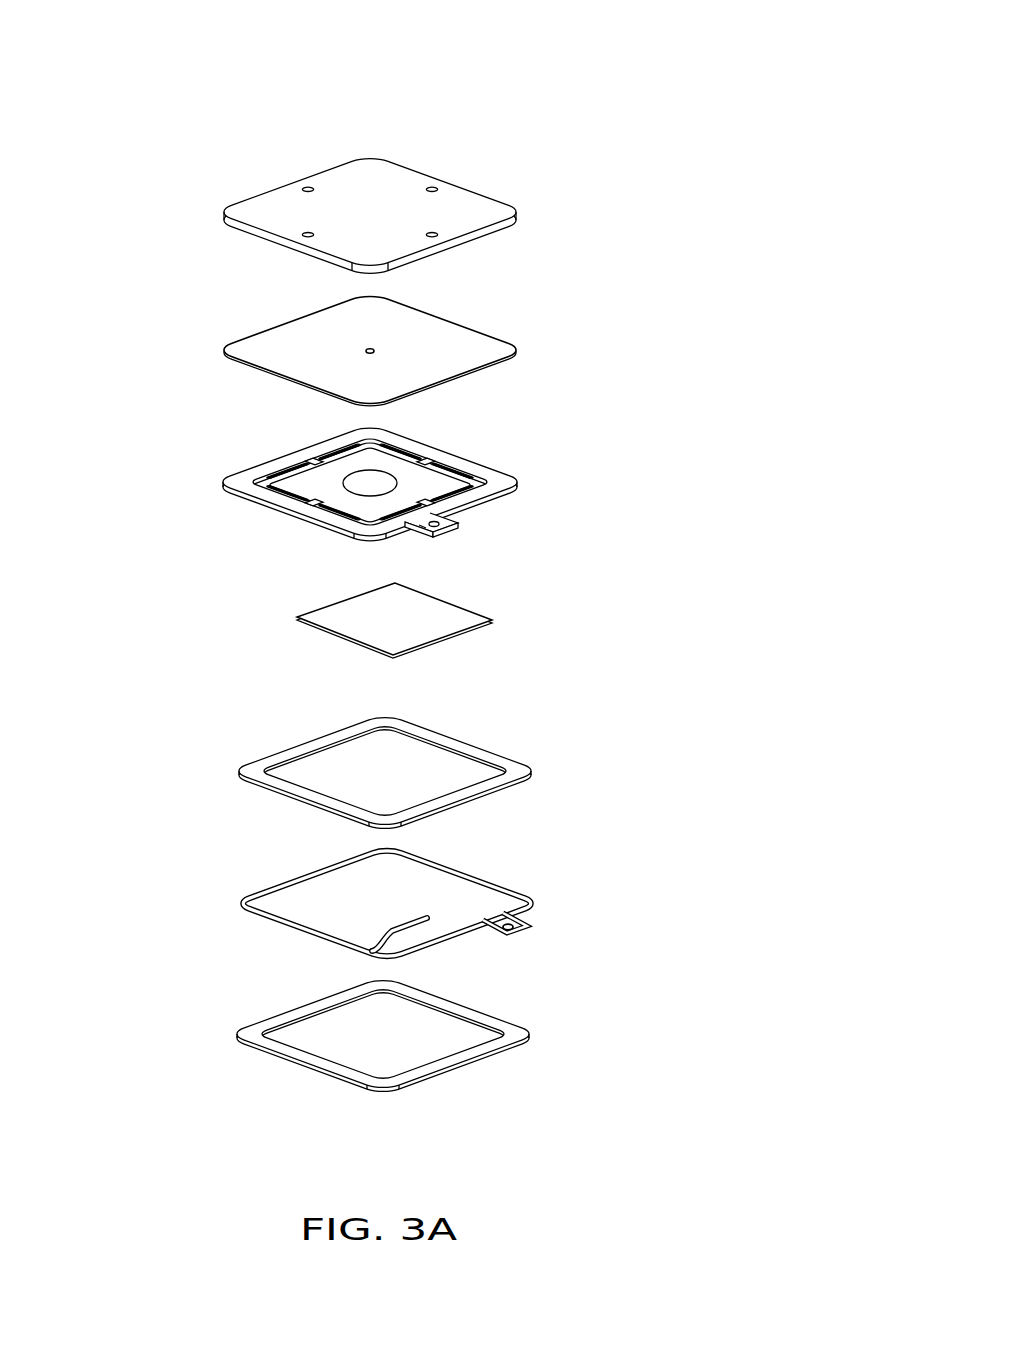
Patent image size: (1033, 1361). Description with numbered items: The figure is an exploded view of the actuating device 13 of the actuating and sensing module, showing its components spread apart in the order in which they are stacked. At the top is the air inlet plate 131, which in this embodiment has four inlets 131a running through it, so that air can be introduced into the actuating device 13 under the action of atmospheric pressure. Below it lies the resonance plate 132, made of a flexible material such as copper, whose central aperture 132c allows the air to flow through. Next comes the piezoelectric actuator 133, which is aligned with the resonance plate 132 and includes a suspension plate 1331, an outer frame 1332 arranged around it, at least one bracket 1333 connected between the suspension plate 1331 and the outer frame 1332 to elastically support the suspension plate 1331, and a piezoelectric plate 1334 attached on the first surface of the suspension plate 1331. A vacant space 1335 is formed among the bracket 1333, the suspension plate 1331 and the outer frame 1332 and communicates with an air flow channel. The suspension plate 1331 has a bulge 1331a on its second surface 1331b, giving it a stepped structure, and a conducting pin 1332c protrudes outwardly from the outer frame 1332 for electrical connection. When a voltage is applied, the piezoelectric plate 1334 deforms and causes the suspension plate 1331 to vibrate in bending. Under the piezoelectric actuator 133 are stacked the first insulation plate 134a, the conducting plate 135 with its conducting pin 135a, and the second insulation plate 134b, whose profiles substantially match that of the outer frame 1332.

The actuating device 13 is at (769, 49).
The air inlet plate 131 is at (506, 189).
The inlet 131a is at (306, 188).
The resonance plate 132 is at (514, 337).
The central aperture 132c is at (368, 349).
The piezoelectric actuator 133 is at (645, 432).
The suspension plate 1331 is at (431, 477).
The bulge 1331a is at (322, 462).
The second surface of the suspension plate 1331b is at (363, 507).
The outer frame 1332 is at (503, 490).
The conducting pin 1332c is at (424, 528).
The bracket 1333 is at (450, 517).
The piezoelectric plate 1334 is at (498, 602).
The vacant space 1335 is at (498, 485).
The first insulation plate 134a is at (526, 752).
The conducting plate 135 is at (524, 889).
The conducting pin 135a is at (530, 928).
The second insulation plate 134b is at (526, 1012).